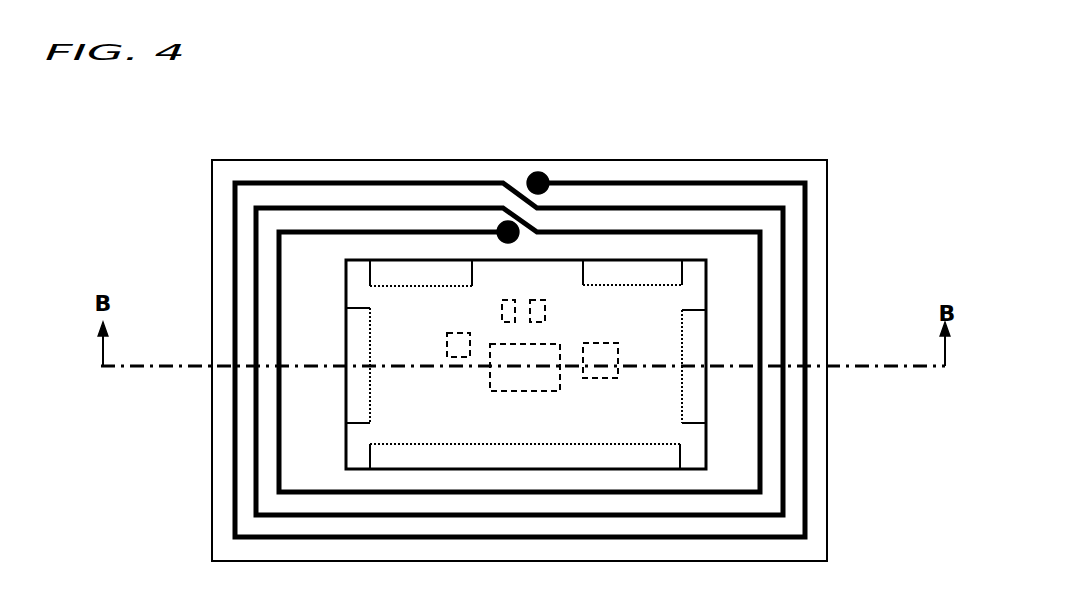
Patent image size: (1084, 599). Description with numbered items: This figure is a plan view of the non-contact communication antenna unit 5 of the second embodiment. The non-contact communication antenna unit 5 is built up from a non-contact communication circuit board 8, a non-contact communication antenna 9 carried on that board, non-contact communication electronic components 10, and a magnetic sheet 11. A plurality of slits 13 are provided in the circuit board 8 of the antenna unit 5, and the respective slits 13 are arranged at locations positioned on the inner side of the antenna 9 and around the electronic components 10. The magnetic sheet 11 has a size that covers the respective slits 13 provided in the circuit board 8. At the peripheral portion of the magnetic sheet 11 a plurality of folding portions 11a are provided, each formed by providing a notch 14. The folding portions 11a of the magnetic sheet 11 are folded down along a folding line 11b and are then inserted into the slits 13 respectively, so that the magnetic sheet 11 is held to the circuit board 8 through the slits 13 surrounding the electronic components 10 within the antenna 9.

The non-contact communication antenna unit 5 is at (500, 153).
The non-contact communication circuit board 8 is at (270, 160).
The non-contact communication antenna 9 is at (697, 183).
The non-contact communication electronic components 10 is at (505, 300).
The magnetic sheet 11 is at (690, 435).
The folding portions 11a is at (480, 458).
The folding line 11b is at (432, 286).
The slits 13 is at (398, 272).
The notch 14 is at (367, 457).